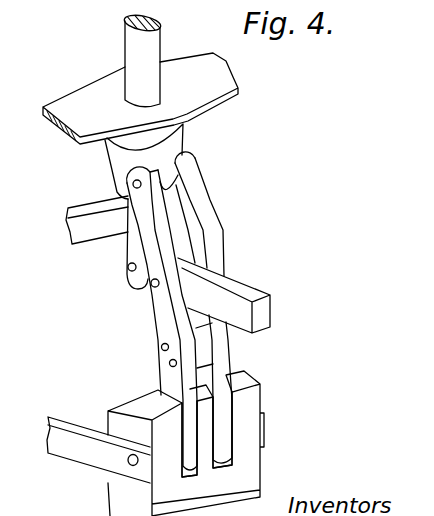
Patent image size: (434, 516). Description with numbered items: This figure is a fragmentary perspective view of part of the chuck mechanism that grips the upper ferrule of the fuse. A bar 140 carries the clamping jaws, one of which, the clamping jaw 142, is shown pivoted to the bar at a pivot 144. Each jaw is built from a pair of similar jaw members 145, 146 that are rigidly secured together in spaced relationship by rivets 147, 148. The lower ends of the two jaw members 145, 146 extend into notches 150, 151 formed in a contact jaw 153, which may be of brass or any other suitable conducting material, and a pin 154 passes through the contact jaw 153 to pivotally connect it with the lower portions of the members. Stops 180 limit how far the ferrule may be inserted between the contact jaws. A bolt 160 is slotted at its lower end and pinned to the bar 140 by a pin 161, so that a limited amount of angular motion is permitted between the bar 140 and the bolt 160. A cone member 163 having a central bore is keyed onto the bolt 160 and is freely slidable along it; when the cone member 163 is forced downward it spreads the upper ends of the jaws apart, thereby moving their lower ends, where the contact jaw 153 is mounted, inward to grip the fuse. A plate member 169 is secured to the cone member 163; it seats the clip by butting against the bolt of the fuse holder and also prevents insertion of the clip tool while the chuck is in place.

The plate member 169 is at (180, 67).
The cone member 163 is at (112, 155).
The rivet 147 is at (131, 181).
The bolt 160 is at (128, 216).
The pin 161 is at (128, 267).
The pivot 144 is at (150, 286).
The jaw member 145 is at (153, 303).
The stop 180 is at (156, 344).
The rivet 148 is at (169, 362).
The clamping jaw 142 is at (238, 180).
The jaw member 146 is at (201, 237).
The bar 140 is at (232, 283).
The contact jaw 153 is at (122, 420).
The notch 150 is at (192, 469).
The notch 151 is at (232, 452).
The pin 154 is at (129, 462).